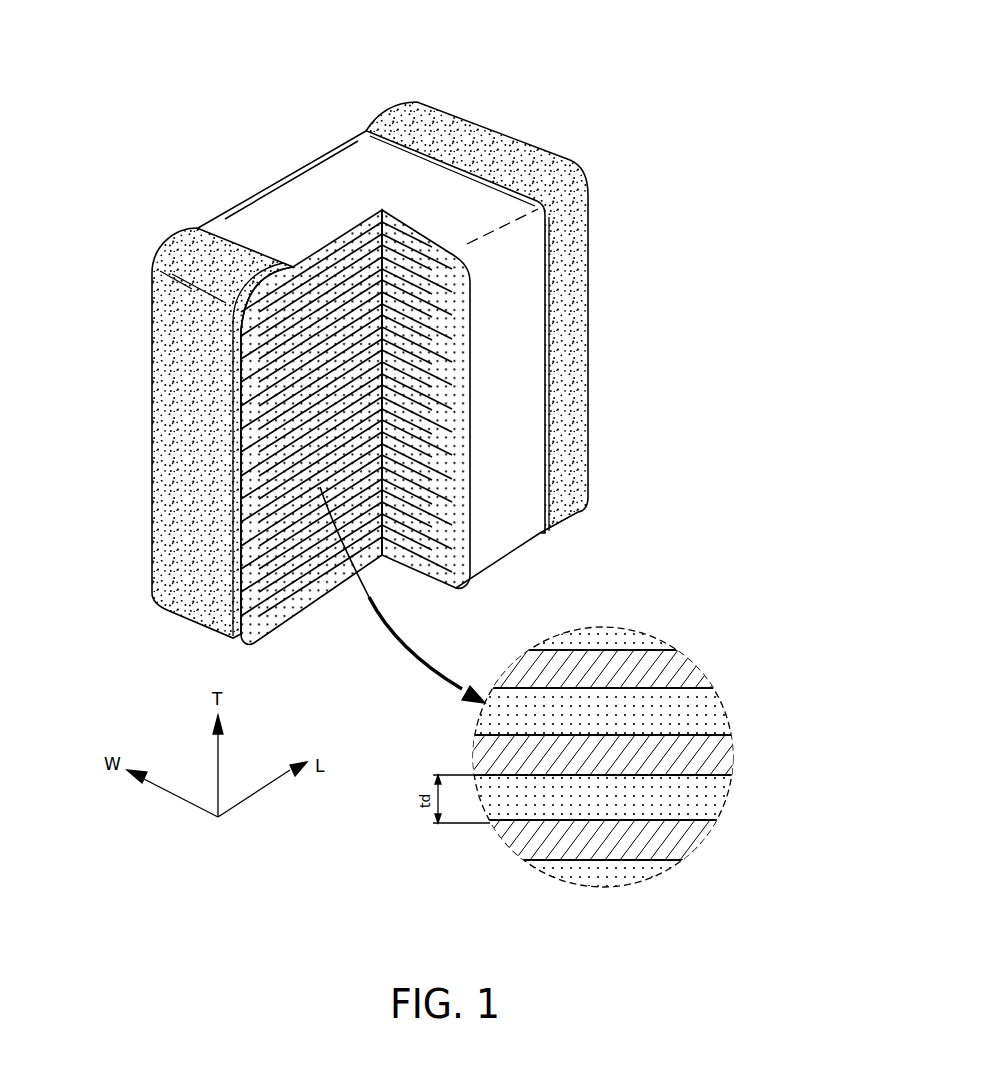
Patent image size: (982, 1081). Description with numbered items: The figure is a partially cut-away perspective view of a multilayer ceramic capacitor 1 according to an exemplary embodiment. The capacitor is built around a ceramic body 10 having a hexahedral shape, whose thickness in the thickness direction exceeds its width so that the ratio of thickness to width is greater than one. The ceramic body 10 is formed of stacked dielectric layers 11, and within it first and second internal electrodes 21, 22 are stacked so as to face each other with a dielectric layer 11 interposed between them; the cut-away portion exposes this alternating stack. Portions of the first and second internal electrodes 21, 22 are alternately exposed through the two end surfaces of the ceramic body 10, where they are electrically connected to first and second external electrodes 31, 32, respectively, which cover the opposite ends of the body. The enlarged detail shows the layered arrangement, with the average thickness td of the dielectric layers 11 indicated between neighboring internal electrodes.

The multilayer ceramic capacitor 1 is at (370, 46).
The ceramic body 10 is at (298, 146).
The dielectric layer 11 is at (693, 710).
The first internal electrode 21 is at (676, 673).
The second internal electrode 22 is at (693, 757).
The first external electrode 31 is at (196, 248).
The second external electrode 32 is at (495, 148).